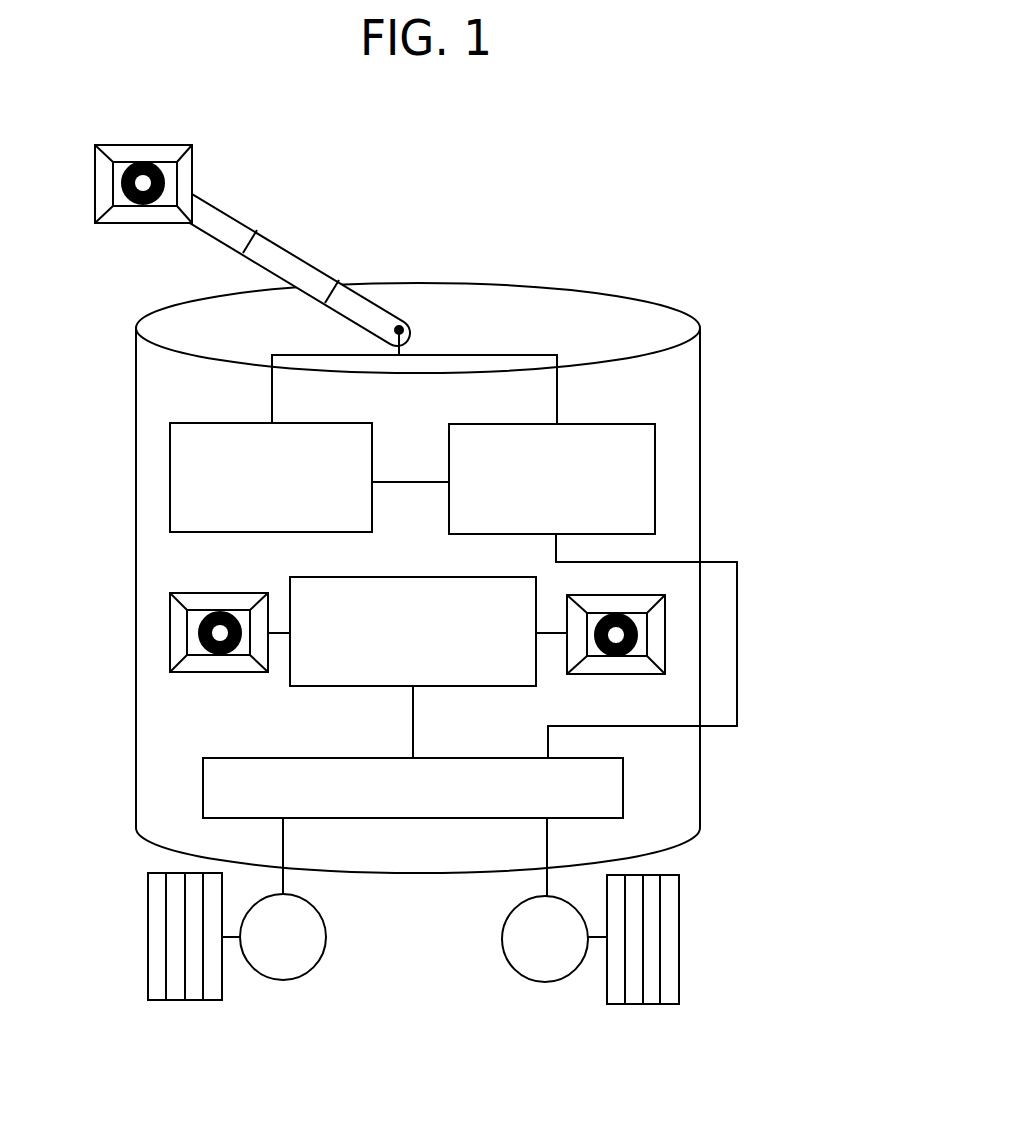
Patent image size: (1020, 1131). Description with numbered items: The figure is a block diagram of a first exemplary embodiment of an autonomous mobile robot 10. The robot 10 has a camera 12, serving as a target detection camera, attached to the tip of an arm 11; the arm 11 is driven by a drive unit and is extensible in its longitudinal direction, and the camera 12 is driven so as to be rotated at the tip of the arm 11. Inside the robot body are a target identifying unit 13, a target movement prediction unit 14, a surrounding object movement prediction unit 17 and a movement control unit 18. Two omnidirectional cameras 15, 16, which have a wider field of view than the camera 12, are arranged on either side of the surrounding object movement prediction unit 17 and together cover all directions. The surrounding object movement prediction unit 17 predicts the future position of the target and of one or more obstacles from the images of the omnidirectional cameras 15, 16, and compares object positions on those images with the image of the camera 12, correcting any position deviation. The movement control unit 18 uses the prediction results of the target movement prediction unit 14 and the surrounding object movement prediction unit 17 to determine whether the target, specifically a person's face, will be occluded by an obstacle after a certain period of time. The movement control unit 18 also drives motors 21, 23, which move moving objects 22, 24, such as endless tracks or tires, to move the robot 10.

The robot 10 is at (634, 258).
The arm 11 is at (314, 266).
The camera 12 is at (192, 166).
The target identifying unit 13 is at (170, 478).
The target movement prediction unit 14 is at (655, 470).
The omnidirectional camera 15 is at (170, 633).
The omnidirectional camera 16 is at (665, 620).
The surrounding object movement prediction unit 17 is at (380, 577).
The movement control unit 18 is at (455, 758).
The motor 21 is at (326, 925).
The moving object 22 is at (148, 926).
The motor 23 is at (510, 964).
The moving object 24 is at (679, 918).